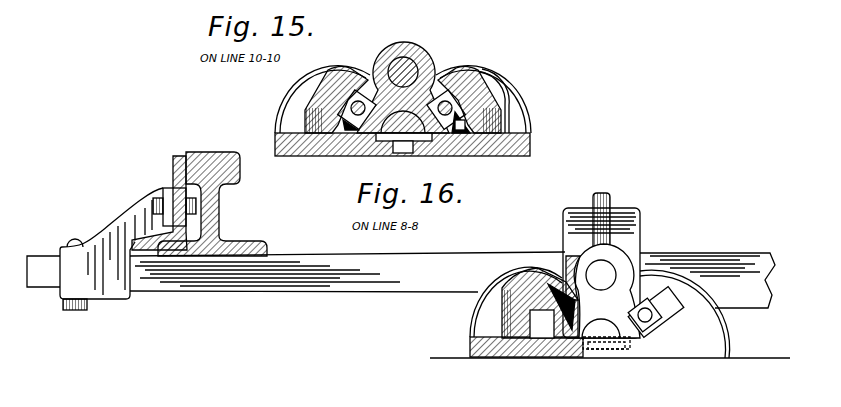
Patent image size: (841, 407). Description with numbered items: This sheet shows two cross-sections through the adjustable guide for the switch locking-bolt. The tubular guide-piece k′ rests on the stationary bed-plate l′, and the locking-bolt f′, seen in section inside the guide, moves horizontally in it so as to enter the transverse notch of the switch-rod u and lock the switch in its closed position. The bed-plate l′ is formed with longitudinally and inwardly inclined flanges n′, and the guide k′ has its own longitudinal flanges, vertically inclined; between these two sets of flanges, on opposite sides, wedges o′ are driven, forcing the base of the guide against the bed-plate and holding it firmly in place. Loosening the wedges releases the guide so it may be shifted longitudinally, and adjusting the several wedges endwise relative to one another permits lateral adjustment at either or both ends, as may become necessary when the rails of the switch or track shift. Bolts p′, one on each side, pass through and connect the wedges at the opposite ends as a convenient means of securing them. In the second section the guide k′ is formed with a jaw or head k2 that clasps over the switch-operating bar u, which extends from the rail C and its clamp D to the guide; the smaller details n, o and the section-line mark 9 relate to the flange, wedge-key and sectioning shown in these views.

In FIG. 15, the stationary bed-plate l′ is at (530, 145).
In FIG. 15, the inclined flanges n′ is at (486, 97).
In FIG. 16, the shell flange n is at (526, 312).
In FIG. 15, the tubular guide-piece k′ is at (425, 52).
In FIG. 16, the tubular guide-piece k′ is at (603, 291).
In FIG. 16, the jaw or head k2 is at (601, 265).
In FIG. 15, the locking-bolt f′ is at (392, 58).
In FIG. 16, the locking-bolt f′ is at (601, 275).
In FIG. 15, the wedges o′ is at (388, 125).
In FIG. 16, the wedges o′ is at (541, 318).
In FIG. 16, the key o is at (656, 312).
In FIG. 15, the bolts p′ is at (360, 88).
In FIG. 16, the bolts p′ is at (570, 345).
In FIG. 15, the section line 9 is at (461, 160).
In FIG. 16, the switch-rod u is at (401, 280).
In FIG. 16, the rail C is at (212, 204).
In FIG. 16, the rail clamp D is at (173, 178).